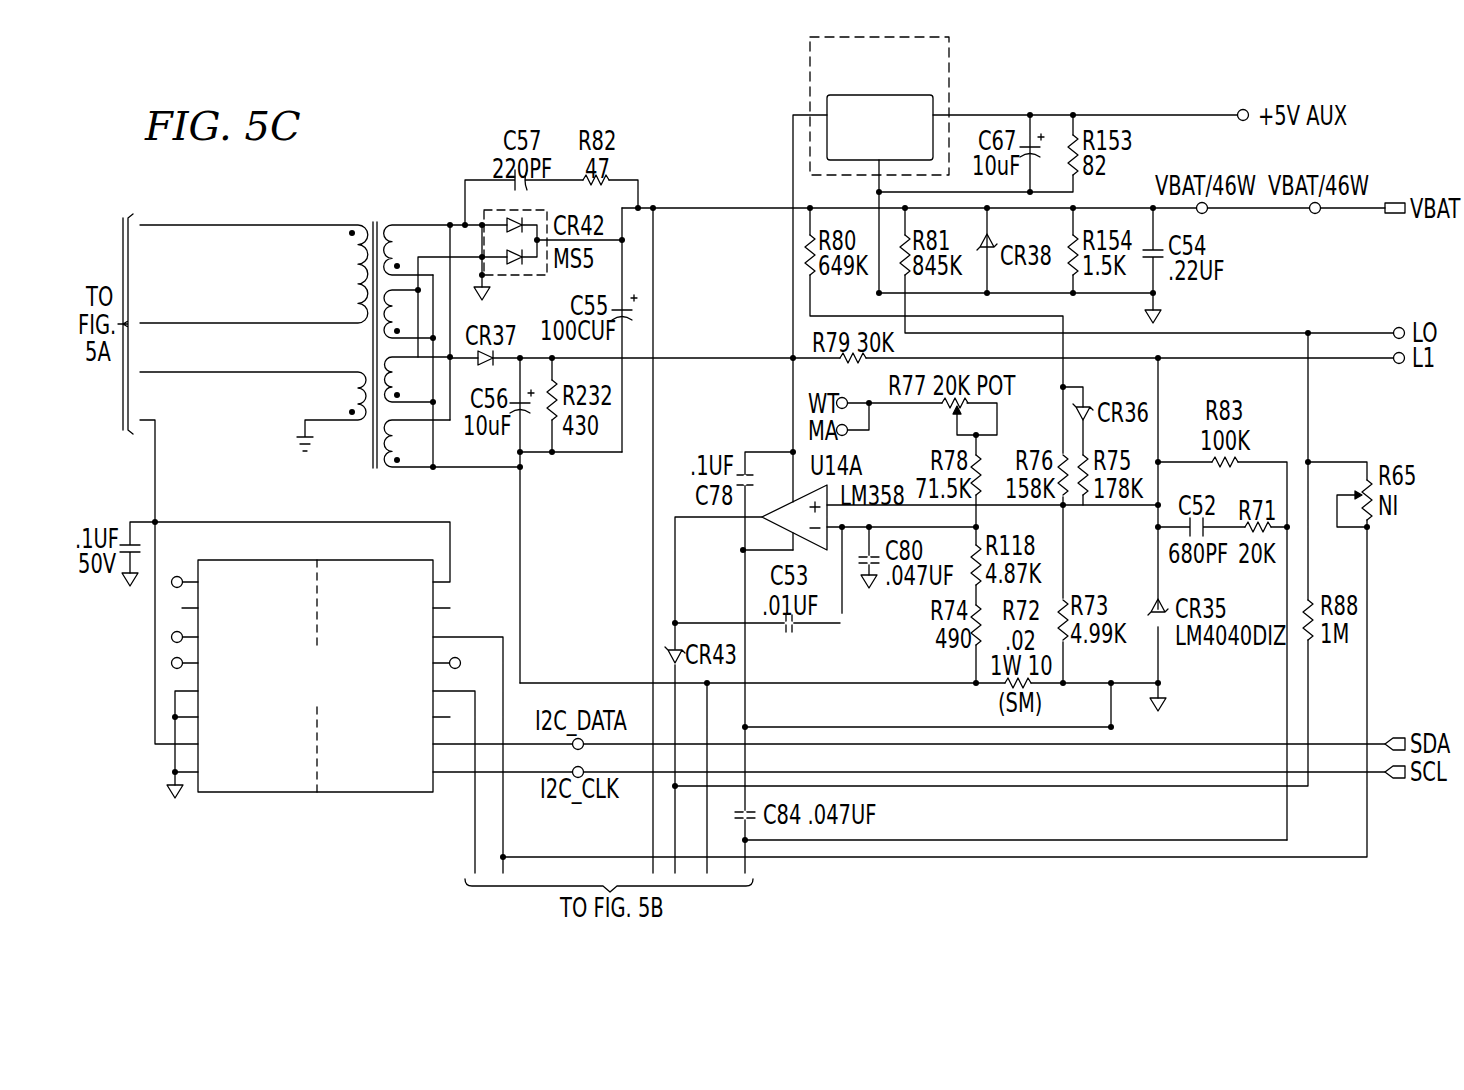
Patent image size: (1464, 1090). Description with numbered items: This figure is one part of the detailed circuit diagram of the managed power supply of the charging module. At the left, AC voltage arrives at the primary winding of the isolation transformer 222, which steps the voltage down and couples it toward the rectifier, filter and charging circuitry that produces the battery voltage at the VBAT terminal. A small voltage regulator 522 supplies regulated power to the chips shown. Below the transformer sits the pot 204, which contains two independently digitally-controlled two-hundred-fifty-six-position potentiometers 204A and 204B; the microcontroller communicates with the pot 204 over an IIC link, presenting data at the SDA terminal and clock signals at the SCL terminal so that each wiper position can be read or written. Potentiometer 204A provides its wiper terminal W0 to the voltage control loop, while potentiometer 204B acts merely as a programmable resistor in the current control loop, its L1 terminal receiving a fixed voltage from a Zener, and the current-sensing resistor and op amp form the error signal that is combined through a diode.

The isolation transformer 222 is at (375, 191).
The voltage regulator 522 is at (950, 73).
The pot 204 is at (317, 793).
The potentiometer 204A is at (377, 622).
The potentiometer 204B is at (300, 748).